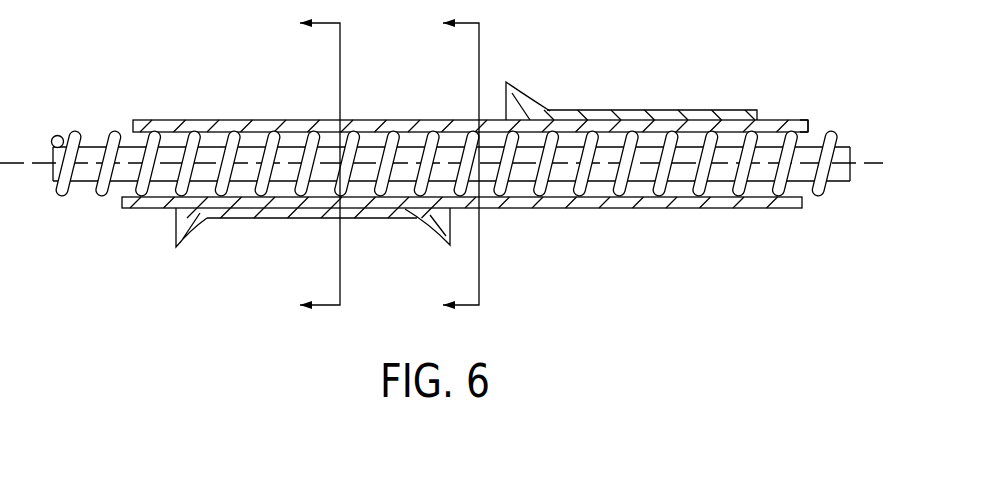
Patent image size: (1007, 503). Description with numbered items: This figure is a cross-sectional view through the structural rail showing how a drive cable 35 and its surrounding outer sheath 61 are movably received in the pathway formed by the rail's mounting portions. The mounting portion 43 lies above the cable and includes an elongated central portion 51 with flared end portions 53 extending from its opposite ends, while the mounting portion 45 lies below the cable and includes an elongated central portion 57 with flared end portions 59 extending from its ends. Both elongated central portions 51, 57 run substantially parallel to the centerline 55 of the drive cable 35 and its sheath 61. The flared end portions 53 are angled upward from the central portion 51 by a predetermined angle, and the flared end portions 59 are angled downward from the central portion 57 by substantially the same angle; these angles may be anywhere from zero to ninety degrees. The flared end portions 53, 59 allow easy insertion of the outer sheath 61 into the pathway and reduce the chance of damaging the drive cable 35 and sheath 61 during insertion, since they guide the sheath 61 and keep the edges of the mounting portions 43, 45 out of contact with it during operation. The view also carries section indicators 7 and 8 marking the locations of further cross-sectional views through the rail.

The drive cable 35 is at (830, 138).
The mounting portion 43 is at (727, 106).
The mounting portion 45 is at (273, 223).
The elongated central portion 51 is at (625, 110).
The flared end portion 53 is at (520, 105).
The centerline 55 is at (860, 162).
The elongated central portion 57 is at (373, 210).
The flared end portion 59 is at (185, 237).
The outer sheath 61 is at (797, 120).
The section line 7- 7 is at (451, 165).
The section line 8- 8 is at (310, 166).